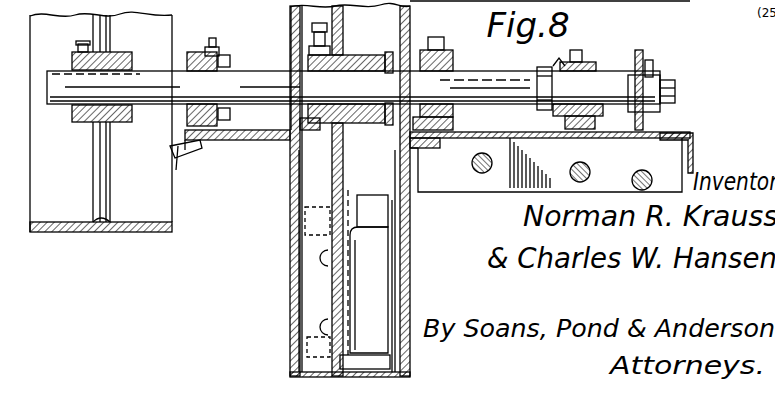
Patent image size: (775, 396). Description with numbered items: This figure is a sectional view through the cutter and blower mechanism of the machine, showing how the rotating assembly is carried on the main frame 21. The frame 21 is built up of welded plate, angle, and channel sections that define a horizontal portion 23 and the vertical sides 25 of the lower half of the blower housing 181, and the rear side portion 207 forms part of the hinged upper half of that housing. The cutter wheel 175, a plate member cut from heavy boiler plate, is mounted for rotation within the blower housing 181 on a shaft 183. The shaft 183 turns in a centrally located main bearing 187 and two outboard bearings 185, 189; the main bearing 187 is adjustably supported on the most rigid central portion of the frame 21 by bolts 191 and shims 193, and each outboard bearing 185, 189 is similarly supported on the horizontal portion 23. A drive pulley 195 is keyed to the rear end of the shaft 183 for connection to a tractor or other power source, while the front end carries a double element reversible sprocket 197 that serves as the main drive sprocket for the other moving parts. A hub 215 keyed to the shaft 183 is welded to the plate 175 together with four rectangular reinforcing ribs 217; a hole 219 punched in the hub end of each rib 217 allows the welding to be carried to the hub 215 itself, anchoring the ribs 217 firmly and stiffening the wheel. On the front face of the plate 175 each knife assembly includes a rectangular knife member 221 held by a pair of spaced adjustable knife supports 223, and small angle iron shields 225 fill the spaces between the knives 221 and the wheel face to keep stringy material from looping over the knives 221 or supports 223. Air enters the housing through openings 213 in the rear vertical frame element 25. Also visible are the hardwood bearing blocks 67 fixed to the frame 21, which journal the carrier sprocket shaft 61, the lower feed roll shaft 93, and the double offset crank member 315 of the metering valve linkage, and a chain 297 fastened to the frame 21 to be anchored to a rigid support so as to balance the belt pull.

The main frame 21 is at (693, 163).
The horizontal portion 23 is at (246, 141).
The sides of the lower half of the blower housing 25 is at (290, 263).
The sprocket shaft 61 is at (586, 181).
The bearing blocks 67 is at (640, 150).
The shaft 93 is at (483, 174).
The cutter wheel 175 is at (341, 22).
The blower housing 181 is at (290, 12).
The shaft 183 is at (262, 72).
The outboard bearing 185 is at (195, 50).
The main bearing 187 is at (445, 56).
The outboard bearing 189 is at (590, 66).
The bolts 191 is at (436, 148).
The shims 193 is at (437, 130).
The drive pulley 195 is at (98, 236).
The reversible sprocket 197 is at (648, 63).
The rear side portion 207 is at (290, 23).
The openings 213 is at (293, 157).
The hub 215 is at (368, 56).
The reinforcing ribs 217 is at (310, 288).
The hole 219 is at (317, 132).
The knife member 221 is at (395, 278).
The knife supports 223 is at (370, 198).
The shields 225 is at (373, 253).
The chain 297 is at (200, 165).
The crank member 315 is at (650, 175).